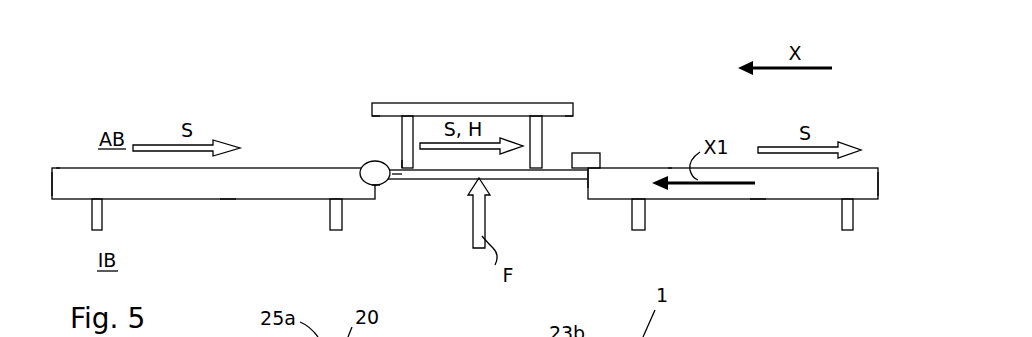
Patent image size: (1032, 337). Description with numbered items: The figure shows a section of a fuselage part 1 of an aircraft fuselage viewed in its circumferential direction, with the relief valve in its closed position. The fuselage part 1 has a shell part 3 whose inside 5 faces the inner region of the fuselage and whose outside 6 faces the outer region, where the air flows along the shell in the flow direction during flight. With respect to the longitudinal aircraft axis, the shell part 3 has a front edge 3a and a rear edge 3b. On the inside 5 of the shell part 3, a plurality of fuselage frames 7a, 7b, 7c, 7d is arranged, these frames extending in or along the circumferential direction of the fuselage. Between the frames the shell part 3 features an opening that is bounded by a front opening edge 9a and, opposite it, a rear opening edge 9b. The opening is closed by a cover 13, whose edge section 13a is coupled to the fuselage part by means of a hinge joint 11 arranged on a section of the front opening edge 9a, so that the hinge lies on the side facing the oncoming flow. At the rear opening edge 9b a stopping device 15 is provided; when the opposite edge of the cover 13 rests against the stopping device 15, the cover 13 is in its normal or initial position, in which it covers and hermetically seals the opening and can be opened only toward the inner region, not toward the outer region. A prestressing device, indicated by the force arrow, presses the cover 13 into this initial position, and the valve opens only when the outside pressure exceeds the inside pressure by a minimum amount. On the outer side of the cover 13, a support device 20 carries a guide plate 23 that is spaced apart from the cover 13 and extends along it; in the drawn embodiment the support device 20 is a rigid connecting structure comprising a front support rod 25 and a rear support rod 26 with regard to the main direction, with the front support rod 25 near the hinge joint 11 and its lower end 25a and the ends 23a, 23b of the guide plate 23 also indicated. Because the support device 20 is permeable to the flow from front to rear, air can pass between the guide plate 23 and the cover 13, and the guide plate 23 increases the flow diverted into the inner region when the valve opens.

The fuselage part 1 is at (622, 88).
The shell part 3 is at (310, 178).
The front edge 3a is at (52, 172).
The rear edge 3b is at (886, 178).
The inside 5 is at (225, 202).
The outside 6 is at (56, 167).
The fuselage frame 7a is at (100, 216).
The fuselage frame 7b is at (322, 211).
The fuselage frame 7c is at (645, 218).
The fuselage frame 7d is at (845, 216).
The front opening edge 9a is at (380, 186).
The rear opening edge 9b is at (588, 186).
The hinge joint 11 is at (362, 163).
The cover 13 is at (456, 172).
The edge section 13a is at (402, 178).
The stopping device 15 is at (590, 154).
The support device 20 is at (372, 136).
The guide plate 23 is at (503, 108).
The first crossbar end 23a is at (398, 112).
The second crossbar end 23b is at (569, 106).
The front support rod 25 is at (402, 132).
The lower end of first strut 25a is at (400, 147).
The rear support rod 26 is at (543, 134).